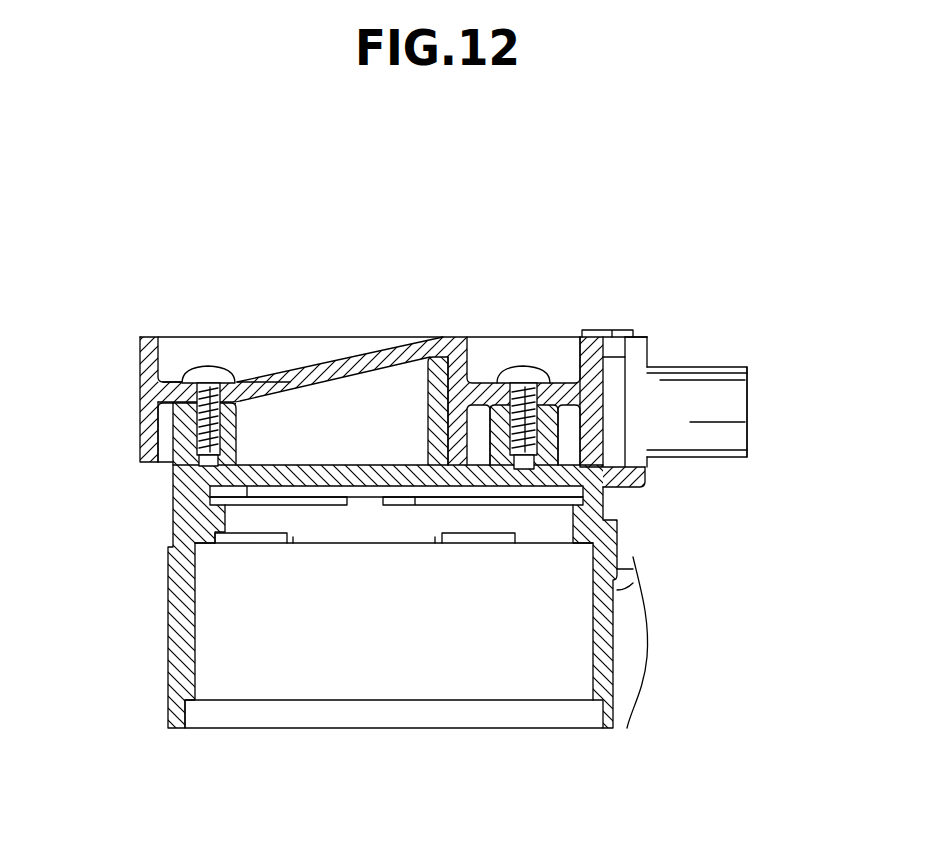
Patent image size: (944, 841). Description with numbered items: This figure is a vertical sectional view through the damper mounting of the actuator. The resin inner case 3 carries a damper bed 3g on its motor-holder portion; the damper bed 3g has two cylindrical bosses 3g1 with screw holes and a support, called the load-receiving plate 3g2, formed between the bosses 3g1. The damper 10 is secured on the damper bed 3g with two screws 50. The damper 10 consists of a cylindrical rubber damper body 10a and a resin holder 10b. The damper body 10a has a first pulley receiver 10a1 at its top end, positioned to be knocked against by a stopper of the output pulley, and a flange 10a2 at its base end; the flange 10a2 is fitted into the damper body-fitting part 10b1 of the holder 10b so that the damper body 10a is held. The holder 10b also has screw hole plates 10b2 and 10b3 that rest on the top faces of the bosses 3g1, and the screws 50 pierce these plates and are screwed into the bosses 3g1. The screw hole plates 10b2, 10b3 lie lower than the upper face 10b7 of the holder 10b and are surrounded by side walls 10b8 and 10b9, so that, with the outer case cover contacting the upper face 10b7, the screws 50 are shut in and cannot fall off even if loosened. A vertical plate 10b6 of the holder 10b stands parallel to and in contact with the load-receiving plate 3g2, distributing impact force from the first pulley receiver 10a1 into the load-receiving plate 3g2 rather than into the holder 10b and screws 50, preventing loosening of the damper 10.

The inner case 3 is at (397, 478).
The damper bed 3g is at (397, 366).
The boss 3g1 is at (173, 428).
The load-receiving plate 3g2 is at (428, 397).
The damper 10 is at (433, 402).
The damper body 10a is at (749, 450).
The first pulley receiver 10a1 is at (748, 412).
The flange 10a2 is at (613, 457).
The holder 10b is at (361, 334).
The damper body-fitting part 10b1 is at (633, 337).
The screw hole plate 10b2 is at (157, 385).
The screw hole plate 10b3 is at (476, 365).
The vertical plate 10b6 is at (448, 455).
The upper face 10b7 is at (295, 337).
The side wall 10b8 is at (260, 347).
The side wall 10b9 is at (513, 350).
The screw 50 is at (193, 362).